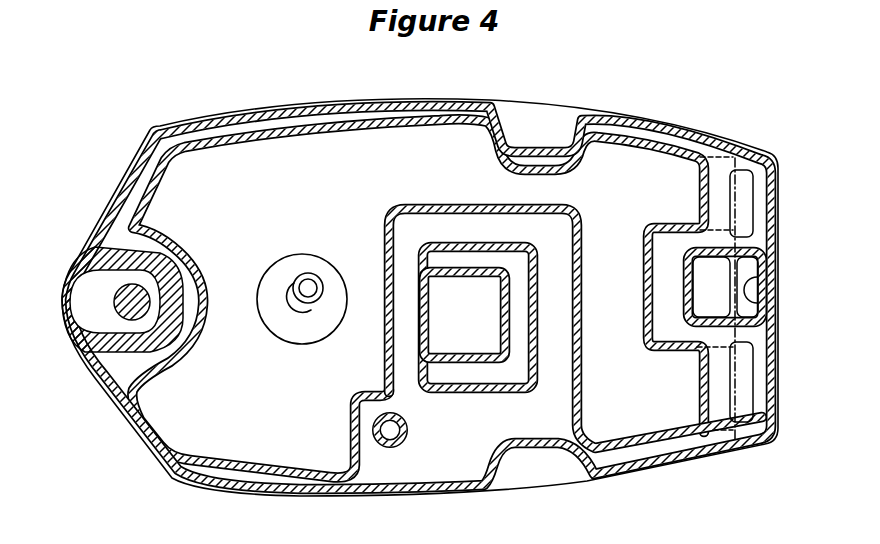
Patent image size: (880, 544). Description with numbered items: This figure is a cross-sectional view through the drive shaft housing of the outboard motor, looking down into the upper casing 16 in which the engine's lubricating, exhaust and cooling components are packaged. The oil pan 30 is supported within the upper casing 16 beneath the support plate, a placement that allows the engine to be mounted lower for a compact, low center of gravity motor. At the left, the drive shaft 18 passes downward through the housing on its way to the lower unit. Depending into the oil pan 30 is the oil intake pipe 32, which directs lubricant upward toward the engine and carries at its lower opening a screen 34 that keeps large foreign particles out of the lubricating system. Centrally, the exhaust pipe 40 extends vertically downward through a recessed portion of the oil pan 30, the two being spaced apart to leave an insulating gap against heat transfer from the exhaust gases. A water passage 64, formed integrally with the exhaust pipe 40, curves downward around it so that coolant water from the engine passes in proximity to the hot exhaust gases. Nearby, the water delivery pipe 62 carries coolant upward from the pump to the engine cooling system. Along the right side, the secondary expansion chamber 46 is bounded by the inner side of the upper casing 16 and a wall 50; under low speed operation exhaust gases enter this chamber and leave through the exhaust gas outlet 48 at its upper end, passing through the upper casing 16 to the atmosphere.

The upper casing 16 is at (663, 124).
The drive shaft 18 is at (116, 298).
The oil pan 30 is at (272, 116).
The oil intake pipe 32 is at (298, 286).
The screen 34 is at (287, 328).
The exhaust pipe 40 is at (413, 262).
The secondary expansion chamber 46 is at (730, 252).
The exhaust gas outlet 48 is at (758, 273).
The wall 50 is at (683, 292).
The water delivery pipe 62 is at (396, 443).
The water passage 64 is at (513, 367).